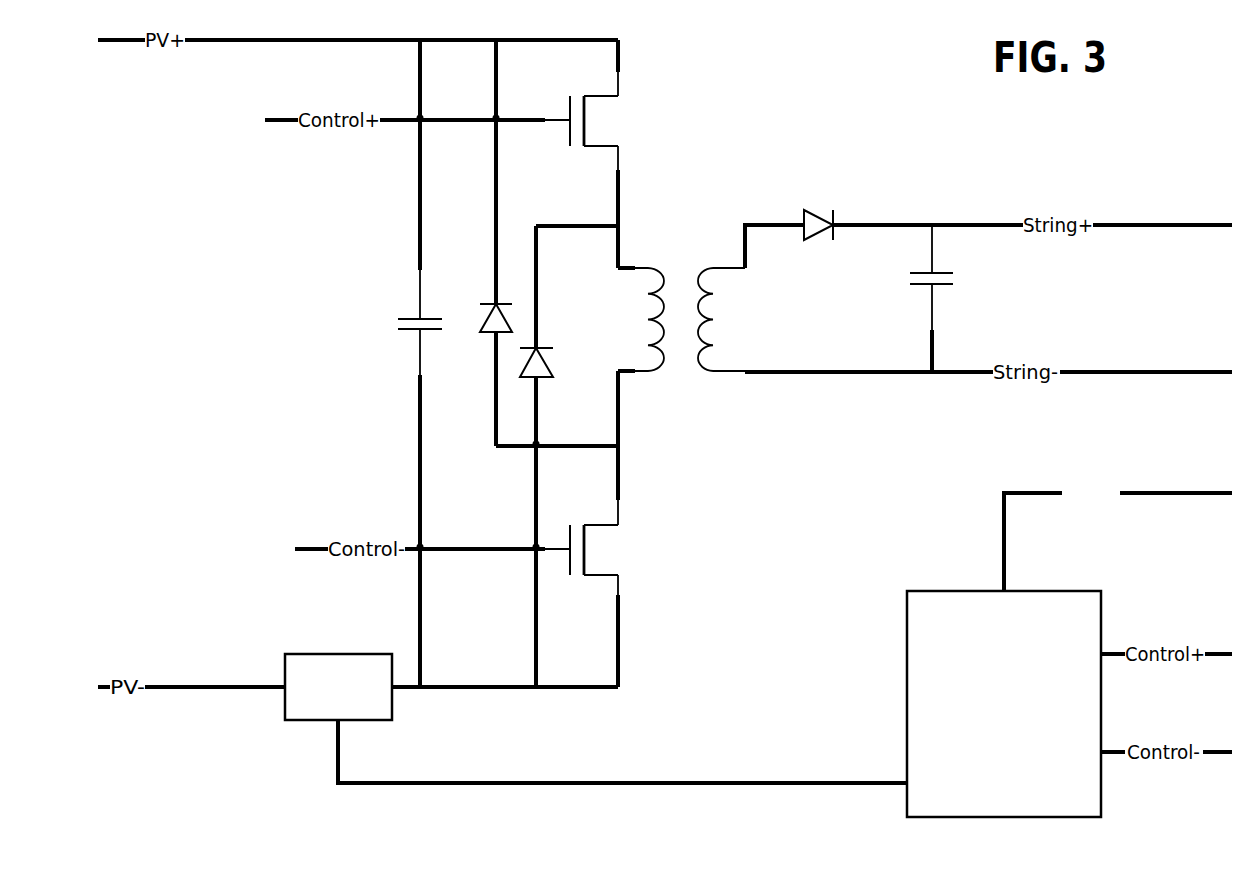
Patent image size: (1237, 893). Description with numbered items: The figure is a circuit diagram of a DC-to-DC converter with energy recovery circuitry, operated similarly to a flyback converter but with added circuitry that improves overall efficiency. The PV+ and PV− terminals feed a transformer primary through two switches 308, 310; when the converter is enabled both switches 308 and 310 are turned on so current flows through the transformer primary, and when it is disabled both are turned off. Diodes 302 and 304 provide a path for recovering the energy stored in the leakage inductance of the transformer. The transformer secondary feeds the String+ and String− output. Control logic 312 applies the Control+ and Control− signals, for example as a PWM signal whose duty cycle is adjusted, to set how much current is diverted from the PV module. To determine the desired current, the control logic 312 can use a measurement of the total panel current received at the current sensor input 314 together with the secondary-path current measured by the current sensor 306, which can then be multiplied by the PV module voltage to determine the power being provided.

The diode 302 is at (557, 371).
The diode 304 is at (485, 313).
The current sensor 306 is at (345, 658).
The switch 308 is at (627, 144).
The switch 310 is at (619, 543).
The control logic 312 is at (1070, 592).
The current sensor input 314 is at (1185, 482).